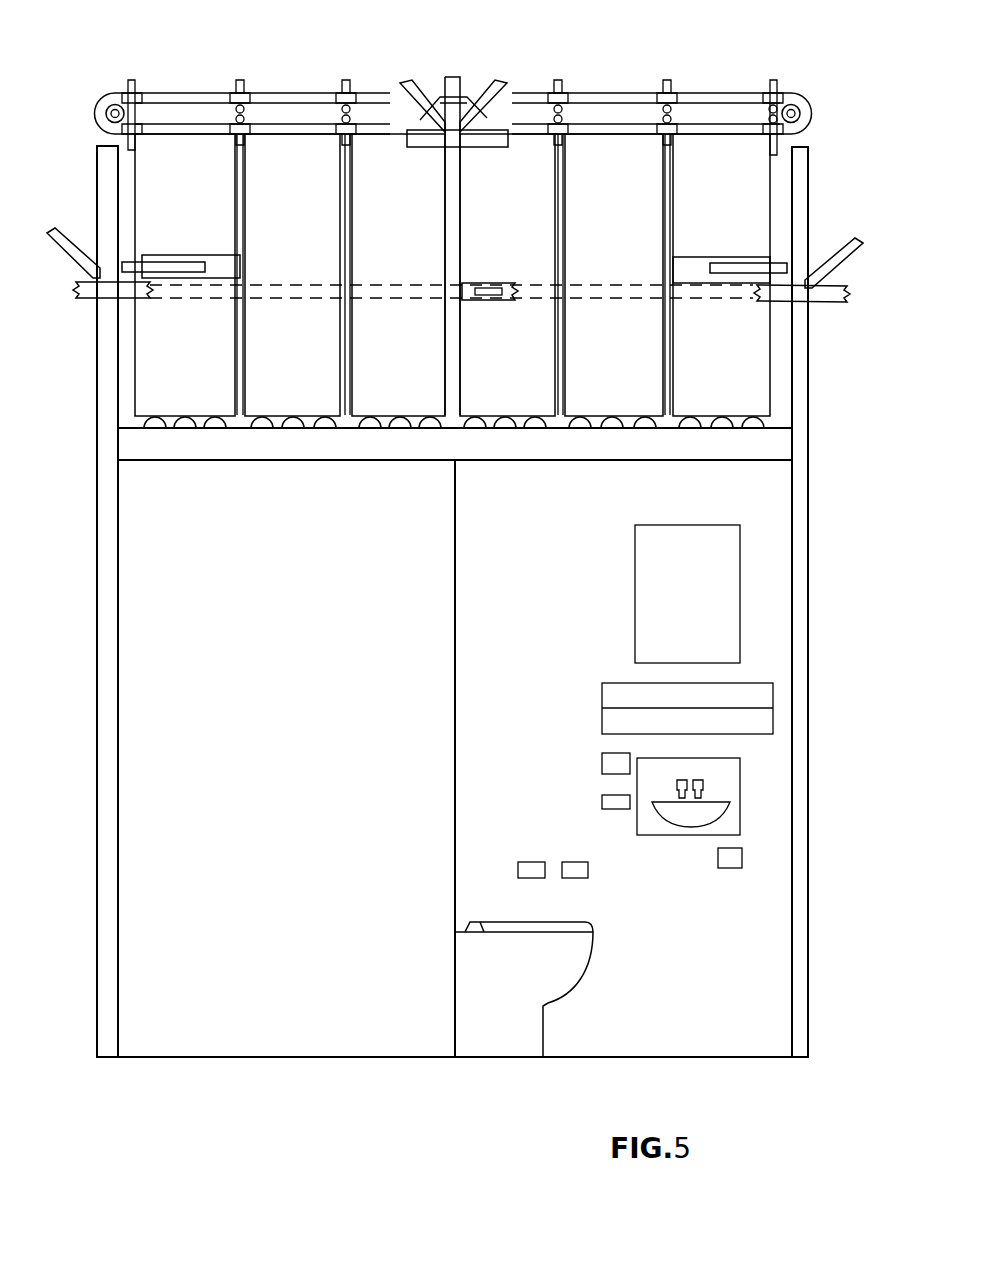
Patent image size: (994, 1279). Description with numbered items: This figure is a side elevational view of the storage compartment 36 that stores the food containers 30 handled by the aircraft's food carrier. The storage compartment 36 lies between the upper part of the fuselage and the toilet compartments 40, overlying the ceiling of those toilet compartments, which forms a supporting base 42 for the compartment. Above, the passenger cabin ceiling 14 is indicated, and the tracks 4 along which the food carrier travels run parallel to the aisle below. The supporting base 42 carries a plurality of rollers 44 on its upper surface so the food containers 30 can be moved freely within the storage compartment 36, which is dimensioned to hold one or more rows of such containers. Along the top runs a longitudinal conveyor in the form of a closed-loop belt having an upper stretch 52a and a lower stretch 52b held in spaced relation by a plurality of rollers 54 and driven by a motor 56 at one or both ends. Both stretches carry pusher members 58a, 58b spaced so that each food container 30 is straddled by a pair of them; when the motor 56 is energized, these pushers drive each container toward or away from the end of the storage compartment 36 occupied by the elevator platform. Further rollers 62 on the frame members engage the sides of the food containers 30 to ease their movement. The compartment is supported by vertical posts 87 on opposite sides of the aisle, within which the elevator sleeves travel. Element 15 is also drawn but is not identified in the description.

The tracks 4 is at (267, 1056).
The ceiling 14 is at (130, 443).
The central support structure 15 is at (472, 246).
The food container 30 is at (757, 222).
The storage compartment 36 is at (505, 275).
The toilet compartment 40 is at (577, 634).
The supporting base 42 is at (527, 442).
The rollers 44 is at (770, 428).
The upper stretch 52a is at (205, 98).
The lower stretch 52b is at (173, 132).
The rollers 54 is at (246, 108).
The motor 56 is at (104, 108).
The pusher members 58a is at (240, 95).
The pusher members 58b is at (452, 160).
The rollers 62 is at (485, 298).
The vertical posts 87 is at (110, 743).